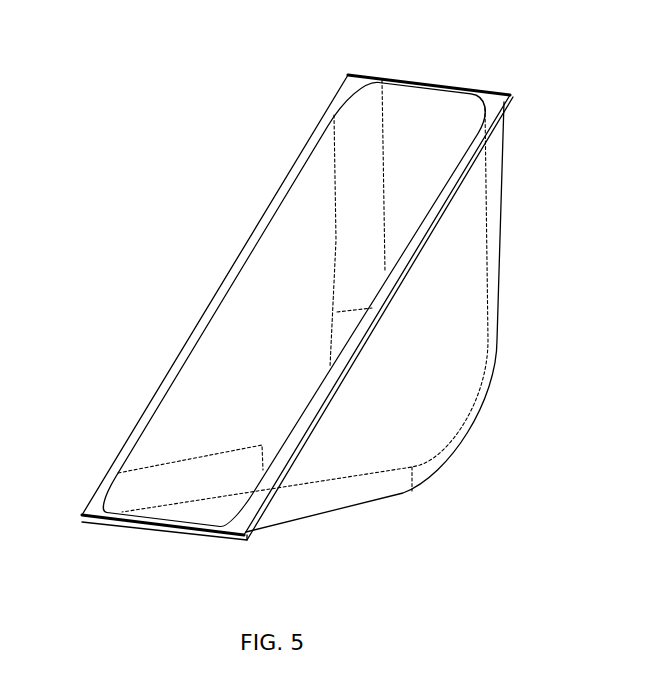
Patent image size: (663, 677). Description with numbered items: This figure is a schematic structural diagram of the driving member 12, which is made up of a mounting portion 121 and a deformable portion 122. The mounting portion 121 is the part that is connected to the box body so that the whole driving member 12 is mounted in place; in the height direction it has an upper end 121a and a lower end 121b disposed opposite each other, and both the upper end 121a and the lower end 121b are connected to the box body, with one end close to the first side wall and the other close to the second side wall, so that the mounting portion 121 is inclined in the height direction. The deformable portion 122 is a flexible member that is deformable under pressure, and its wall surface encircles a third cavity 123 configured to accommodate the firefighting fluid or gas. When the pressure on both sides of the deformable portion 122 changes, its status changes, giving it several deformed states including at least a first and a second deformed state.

The driving member 12 is at (205, 175).
The mounting portion 121 is at (102, 503).
The upper end 121a is at (482, 92).
The lower end 121b is at (160, 532).
The deformable portion 122 is at (455, 422).
The third cavity 123 is at (418, 102).